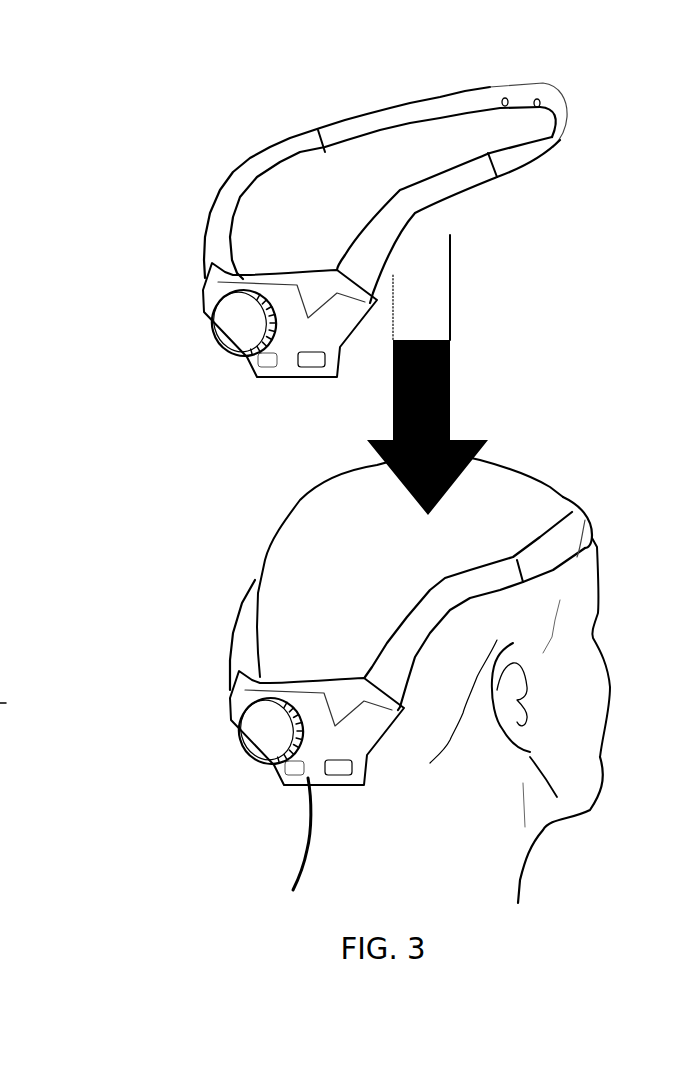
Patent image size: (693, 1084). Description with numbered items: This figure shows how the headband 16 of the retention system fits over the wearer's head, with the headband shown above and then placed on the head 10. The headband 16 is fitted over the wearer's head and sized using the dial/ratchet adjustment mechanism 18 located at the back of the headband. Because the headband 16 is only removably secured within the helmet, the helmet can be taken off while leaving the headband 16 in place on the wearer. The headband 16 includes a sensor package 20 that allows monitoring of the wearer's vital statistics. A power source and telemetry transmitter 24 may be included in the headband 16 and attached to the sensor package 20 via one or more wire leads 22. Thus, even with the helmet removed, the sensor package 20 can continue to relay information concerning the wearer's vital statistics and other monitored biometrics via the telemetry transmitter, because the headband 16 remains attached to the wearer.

The head-mounted device system on user's head 10 is at (558, 857).
The headband 16 is at (505, 162).
The dial/ratchet adjustment mechanism 18 is at (230, 332).
The sensor package 20 is at (560, 93).
The wire leads 22 is at (253, 168).
The power source and telemetry transmitter 24 is at (310, 782).